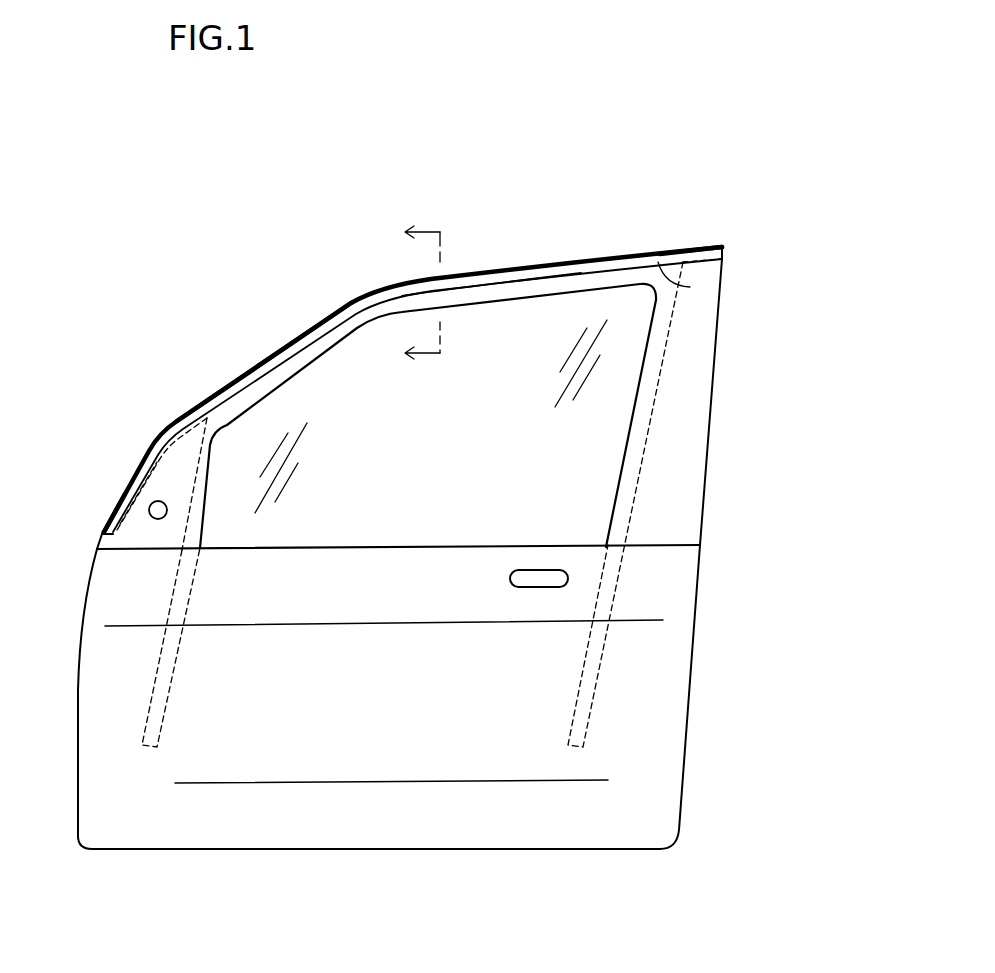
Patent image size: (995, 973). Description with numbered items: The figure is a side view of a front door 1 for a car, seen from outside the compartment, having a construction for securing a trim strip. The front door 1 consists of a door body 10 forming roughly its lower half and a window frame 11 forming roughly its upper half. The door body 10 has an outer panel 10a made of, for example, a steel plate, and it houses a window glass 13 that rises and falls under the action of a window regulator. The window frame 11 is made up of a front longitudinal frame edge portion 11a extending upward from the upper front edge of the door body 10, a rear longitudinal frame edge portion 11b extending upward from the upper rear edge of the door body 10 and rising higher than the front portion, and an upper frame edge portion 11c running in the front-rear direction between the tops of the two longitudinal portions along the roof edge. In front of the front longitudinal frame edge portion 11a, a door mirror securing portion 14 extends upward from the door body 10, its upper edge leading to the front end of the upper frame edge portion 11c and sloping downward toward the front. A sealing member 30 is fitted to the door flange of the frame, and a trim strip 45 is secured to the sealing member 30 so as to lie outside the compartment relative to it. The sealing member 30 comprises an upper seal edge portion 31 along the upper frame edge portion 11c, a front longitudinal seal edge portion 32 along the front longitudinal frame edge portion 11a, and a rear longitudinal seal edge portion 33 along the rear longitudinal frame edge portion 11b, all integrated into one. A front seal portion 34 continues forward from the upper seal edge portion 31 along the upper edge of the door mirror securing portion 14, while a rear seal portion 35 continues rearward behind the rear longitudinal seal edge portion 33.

The front door 1 is at (336, 214).
The door body 10 is at (688, 752).
The outer panel 10a is at (383, 830).
The window frame 11 is at (719, 357).
The front longitudinal frame edge portion 11a is at (208, 467).
The rear longitudinal frame edge portion 11b is at (690, 430).
The upper frame edge portion 11c is at (488, 287).
The window glass 13 is at (535, 325).
The door mirror securing portion 14 is at (160, 483).
The sealing member 30 is at (623, 247).
The upper seal edge portion 31 is at (277, 377).
The front longitudinal seal edge portion 32 is at (153, 705).
The rear longitudinal seal edge portion 33 is at (592, 680).
The front seal portion 34 is at (107, 510).
The rear seal portion 35 is at (701, 243).
The trim strip 45 is at (690, 287).